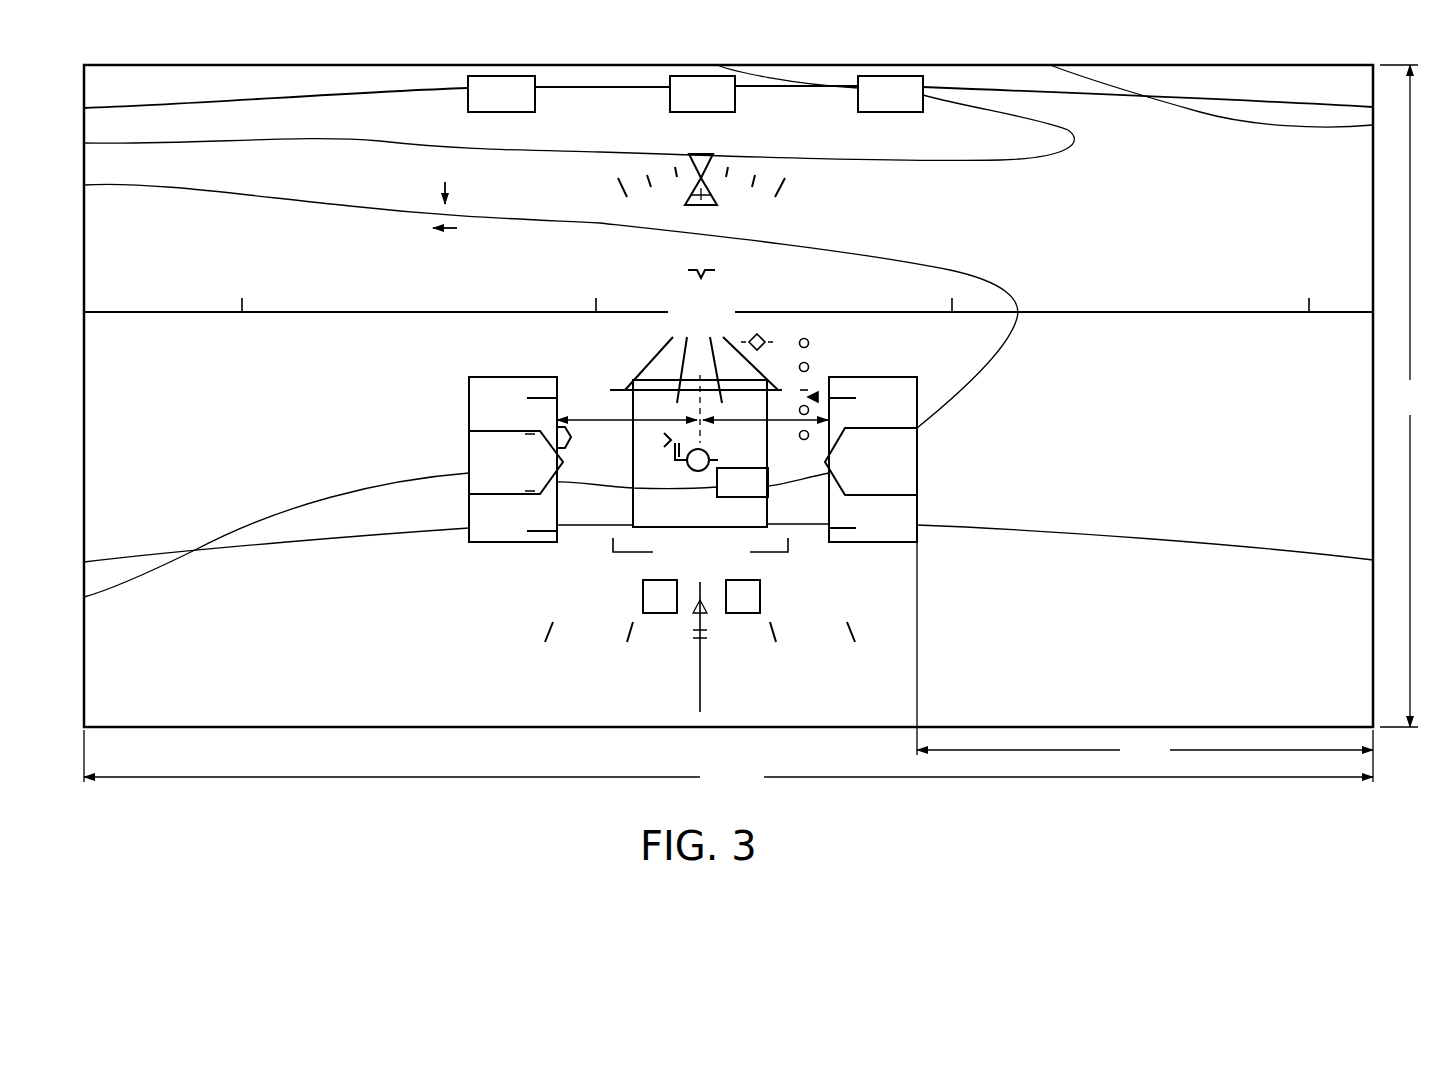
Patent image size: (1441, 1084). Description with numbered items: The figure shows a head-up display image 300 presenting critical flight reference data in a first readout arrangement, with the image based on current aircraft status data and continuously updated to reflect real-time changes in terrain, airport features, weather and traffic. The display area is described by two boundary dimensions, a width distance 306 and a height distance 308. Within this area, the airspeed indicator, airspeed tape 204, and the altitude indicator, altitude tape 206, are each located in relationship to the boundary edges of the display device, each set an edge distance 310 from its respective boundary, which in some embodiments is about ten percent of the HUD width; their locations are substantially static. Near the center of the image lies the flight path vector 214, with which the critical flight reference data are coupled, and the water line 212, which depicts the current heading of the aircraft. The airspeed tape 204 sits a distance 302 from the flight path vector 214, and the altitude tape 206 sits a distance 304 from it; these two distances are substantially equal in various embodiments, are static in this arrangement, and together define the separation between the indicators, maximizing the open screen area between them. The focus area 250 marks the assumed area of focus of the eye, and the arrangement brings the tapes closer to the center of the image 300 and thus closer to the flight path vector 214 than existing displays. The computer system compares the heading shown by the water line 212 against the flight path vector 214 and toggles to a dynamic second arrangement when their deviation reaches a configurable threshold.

The image 300 is at (1153, 63).
The airspeed tape 204 is at (469, 386).
The altitude tape 206 is at (870, 377).
The water line 212 is at (704, 274).
The flight path vector 214 is at (698, 472).
The focus area 250 is at (632, 425).
The distance 302 is at (592, 420).
The distance 304 is at (737, 423).
The distance 306 is at (728, 762).
The distance 308 is at (1407, 396).
The edge distance 310 is at (1145, 654).